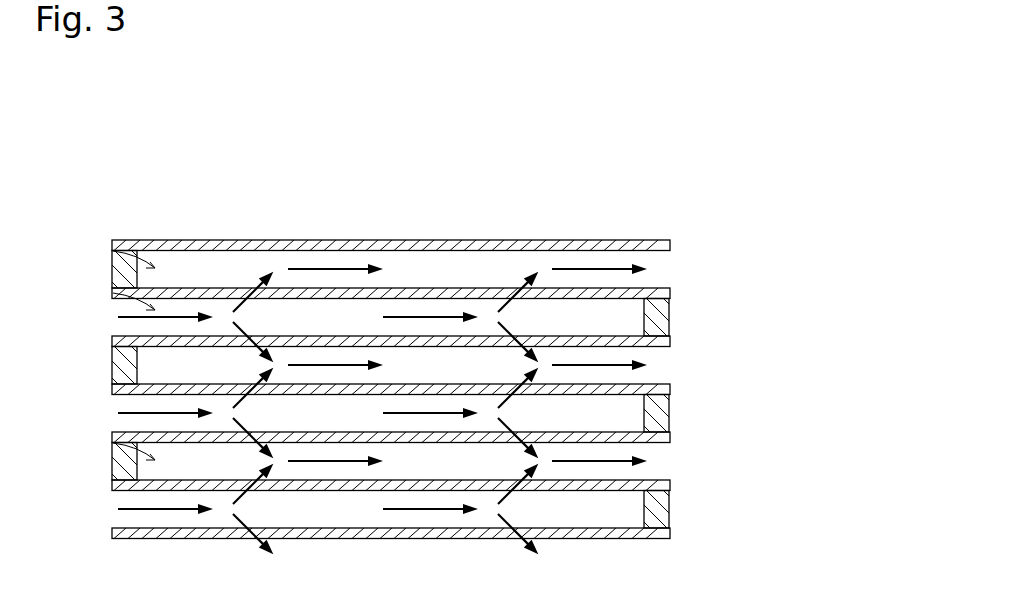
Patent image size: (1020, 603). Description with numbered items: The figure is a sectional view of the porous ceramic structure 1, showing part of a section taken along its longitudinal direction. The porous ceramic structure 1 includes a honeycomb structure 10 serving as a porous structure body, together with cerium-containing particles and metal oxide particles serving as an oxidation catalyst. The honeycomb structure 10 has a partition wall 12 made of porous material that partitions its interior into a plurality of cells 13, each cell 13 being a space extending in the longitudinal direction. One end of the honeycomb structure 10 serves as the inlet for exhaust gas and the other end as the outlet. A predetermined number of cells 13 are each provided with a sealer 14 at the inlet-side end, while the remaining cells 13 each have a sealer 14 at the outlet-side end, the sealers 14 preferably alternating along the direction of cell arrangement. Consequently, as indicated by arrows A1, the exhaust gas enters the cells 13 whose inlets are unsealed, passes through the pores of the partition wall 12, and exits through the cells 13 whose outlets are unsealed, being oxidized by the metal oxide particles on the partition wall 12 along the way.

The porous ceramic structure 1 is at (249, 177).
The honeycomb structure 10 is at (607, 220).
The partition wall 12 is at (448, 243).
The cells 13 is at (113, 251).
The sealer 14 is at (120, 370).
The arrows A1 is at (253, 297).